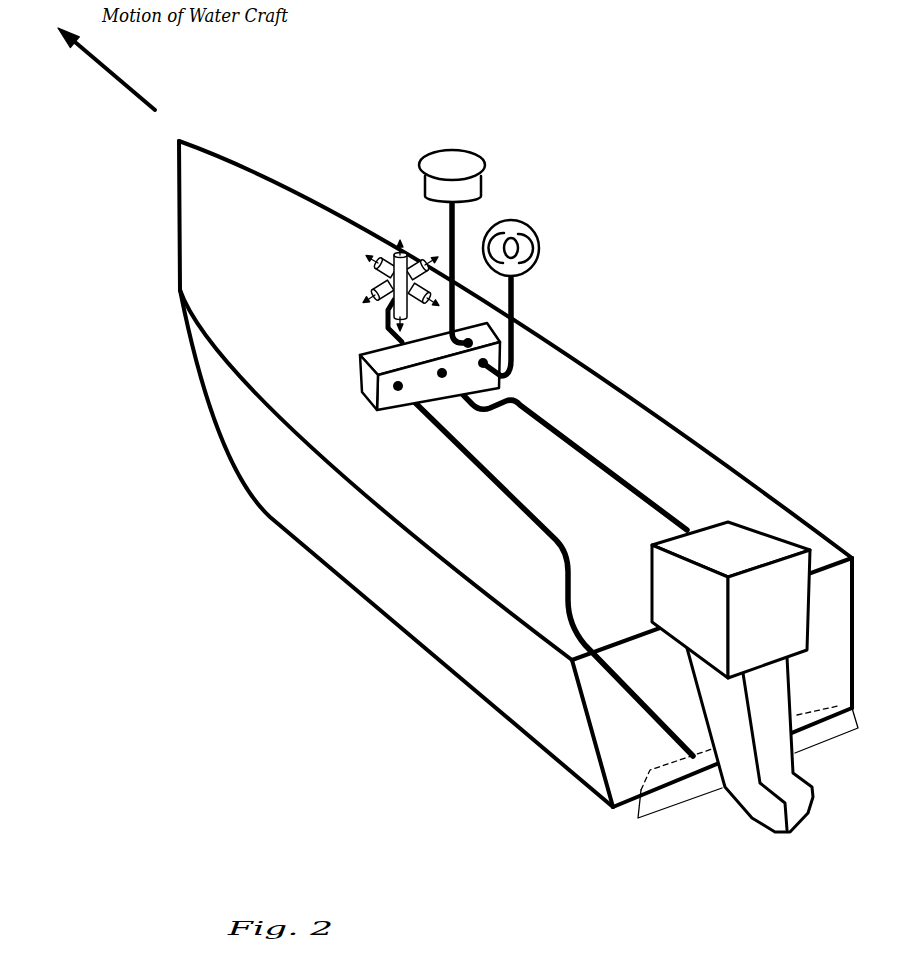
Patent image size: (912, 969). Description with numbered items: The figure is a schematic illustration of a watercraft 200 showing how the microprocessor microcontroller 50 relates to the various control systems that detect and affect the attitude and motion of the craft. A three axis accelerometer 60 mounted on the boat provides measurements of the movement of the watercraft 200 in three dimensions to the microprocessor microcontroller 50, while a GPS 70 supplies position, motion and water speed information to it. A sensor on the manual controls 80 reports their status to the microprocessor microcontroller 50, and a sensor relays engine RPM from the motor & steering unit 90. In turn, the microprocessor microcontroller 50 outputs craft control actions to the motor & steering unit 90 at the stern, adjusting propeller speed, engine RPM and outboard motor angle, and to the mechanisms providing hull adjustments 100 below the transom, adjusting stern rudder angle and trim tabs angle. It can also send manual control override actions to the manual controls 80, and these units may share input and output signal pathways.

The microprocessor microcontroller 50 is at (362, 385).
The three axis accelerometer 60 is at (380, 275).
The GPS 70 is at (453, 148).
The manual controls 80 is at (514, 220).
The motor & steering unit 90 is at (728, 543).
The hull adjustments 100 is at (652, 818).
The watercraft 200 is at (385, 590).